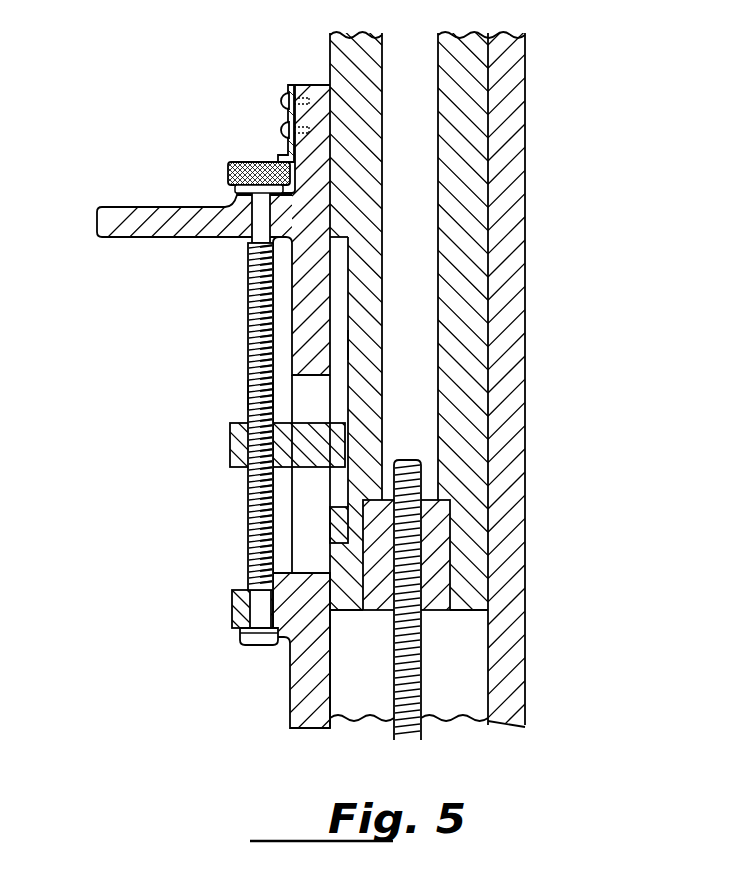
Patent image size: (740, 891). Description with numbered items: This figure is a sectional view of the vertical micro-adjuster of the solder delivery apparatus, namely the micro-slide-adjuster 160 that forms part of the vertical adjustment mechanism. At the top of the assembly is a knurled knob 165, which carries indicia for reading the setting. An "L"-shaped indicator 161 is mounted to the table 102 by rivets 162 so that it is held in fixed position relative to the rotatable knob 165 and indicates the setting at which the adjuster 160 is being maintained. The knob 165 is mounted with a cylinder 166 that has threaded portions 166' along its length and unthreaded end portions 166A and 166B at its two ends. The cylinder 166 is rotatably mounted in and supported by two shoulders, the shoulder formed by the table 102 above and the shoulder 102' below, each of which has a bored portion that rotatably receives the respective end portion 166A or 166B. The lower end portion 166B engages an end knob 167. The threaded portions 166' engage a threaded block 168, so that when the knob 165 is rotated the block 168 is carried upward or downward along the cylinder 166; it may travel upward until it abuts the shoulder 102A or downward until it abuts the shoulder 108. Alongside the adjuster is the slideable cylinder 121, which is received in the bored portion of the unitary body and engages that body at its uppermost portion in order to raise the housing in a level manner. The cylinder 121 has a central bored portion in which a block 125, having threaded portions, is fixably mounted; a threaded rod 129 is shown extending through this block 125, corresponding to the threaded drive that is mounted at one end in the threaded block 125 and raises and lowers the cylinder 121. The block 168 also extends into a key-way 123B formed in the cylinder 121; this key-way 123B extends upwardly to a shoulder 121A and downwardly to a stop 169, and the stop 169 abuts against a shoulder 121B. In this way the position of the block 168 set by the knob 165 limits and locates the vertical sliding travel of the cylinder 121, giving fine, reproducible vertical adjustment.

The table 102 is at (163, 248).
The shoulder 102' is at (205, 610).
The shoulder 102A is at (313, 364).
The shoulder 108 is at (310, 620).
The cylinder 121 is at (462, 218).
The shoulder 121A is at (335, 236).
The shoulder 121B is at (353, 548).
The key-way 123B is at (338, 346).
The block 125 is at (430, 552).
The threaded rod 129 is at (417, 668).
The micro-slide-adjuster 160 is at (240, 152).
The "L"-shaped indicator 161 is at (288, 156).
The rivets 162 is at (305, 129).
The knurled knob 165 is at (230, 170).
The cylinder 166 is at (215, 416).
The threaded portions 166' is at (180, 399).
The end portion 166A is at (258, 232).
The end portion 166B is at (262, 602).
The end knob 167 is at (247, 633).
The threaded block 168 is at (240, 447).
The stop 169 is at (333, 520).